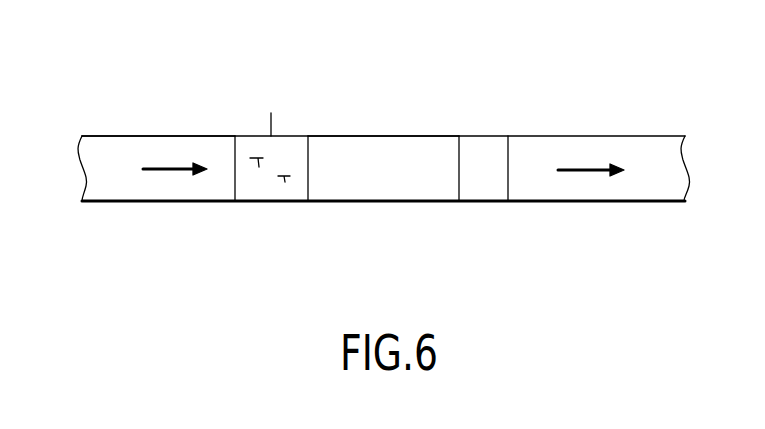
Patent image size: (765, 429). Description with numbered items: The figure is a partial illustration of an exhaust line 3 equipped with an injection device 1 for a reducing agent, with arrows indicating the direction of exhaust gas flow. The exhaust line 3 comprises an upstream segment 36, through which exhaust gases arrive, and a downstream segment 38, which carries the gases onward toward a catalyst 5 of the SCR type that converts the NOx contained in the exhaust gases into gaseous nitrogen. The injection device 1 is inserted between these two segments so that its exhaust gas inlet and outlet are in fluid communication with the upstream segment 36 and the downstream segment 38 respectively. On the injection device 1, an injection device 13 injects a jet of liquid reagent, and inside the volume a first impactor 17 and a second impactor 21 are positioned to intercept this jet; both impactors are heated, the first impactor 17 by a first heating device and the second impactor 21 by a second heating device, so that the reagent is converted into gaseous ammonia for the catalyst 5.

The exhaust line 3 is at (534, 72).
The upstream segment 36 is at (157, 136).
The injection device 1 is at (247, 120).
The injection device 13 is at (273, 123).
The second impactor 21 is at (259, 167).
The first impactor 17 is at (285, 182).
The downstream segment 38 is at (393, 136).
The catalyst 5 is at (483, 193).